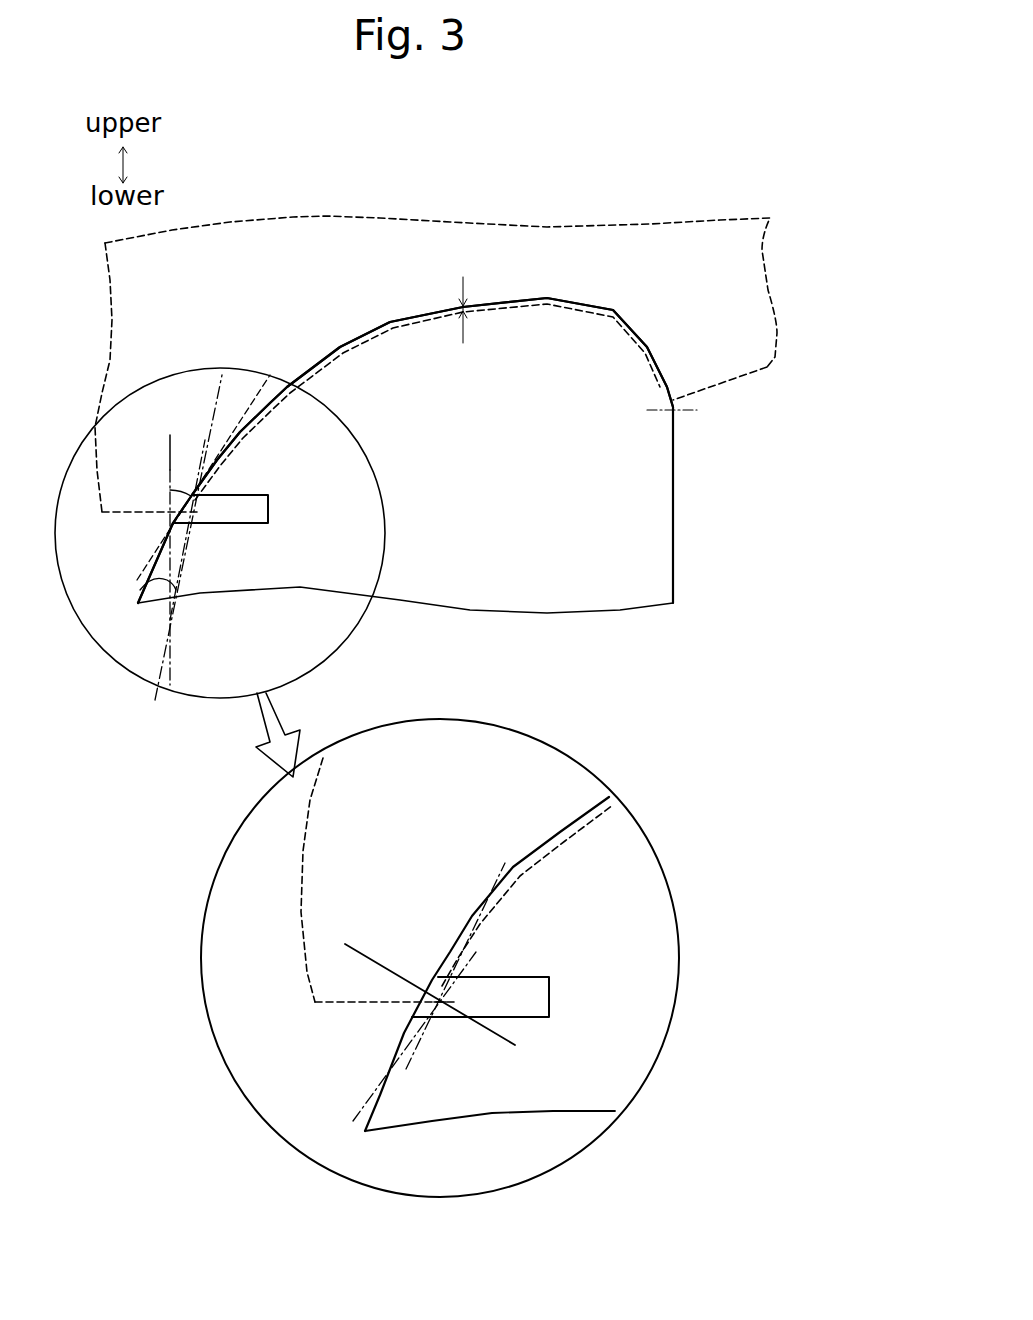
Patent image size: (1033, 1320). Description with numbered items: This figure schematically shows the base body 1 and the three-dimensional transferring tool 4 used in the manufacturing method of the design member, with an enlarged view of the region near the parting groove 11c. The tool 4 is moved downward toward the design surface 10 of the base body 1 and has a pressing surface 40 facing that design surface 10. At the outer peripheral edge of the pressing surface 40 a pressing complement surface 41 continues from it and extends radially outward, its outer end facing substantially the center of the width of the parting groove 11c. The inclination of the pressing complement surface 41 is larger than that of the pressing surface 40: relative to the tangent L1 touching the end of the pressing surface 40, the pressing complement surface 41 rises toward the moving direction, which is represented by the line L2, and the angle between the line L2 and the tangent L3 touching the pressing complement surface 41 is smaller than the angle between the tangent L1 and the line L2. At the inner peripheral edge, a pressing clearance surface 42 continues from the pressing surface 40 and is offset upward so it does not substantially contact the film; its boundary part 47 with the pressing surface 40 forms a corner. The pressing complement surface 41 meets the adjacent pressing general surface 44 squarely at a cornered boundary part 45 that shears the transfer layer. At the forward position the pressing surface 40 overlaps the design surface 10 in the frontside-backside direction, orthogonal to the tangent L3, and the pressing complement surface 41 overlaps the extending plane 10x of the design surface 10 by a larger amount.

The base body 1 is at (658, 510).
The three-dimensional transferring tool 4 is at (270, 228).
The design surface 10 is at (494, 300).
The extending plane 10x is at (420, 1000).
The parting groove 11c is at (266, 521).
The pressing surface 40 is at (333, 363).
The pressing complement surface 41 is at (195, 500).
The pressing clearance surface 42 is at (720, 388).
The pressing general surface 44 is at (118, 513).
The boundary part 45 is at (187, 528).
The boundary part 47 is at (697, 410).
The tangent L1 is at (148, 562).
The line L2 is at (168, 448).
The tangent L3 is at (165, 653).